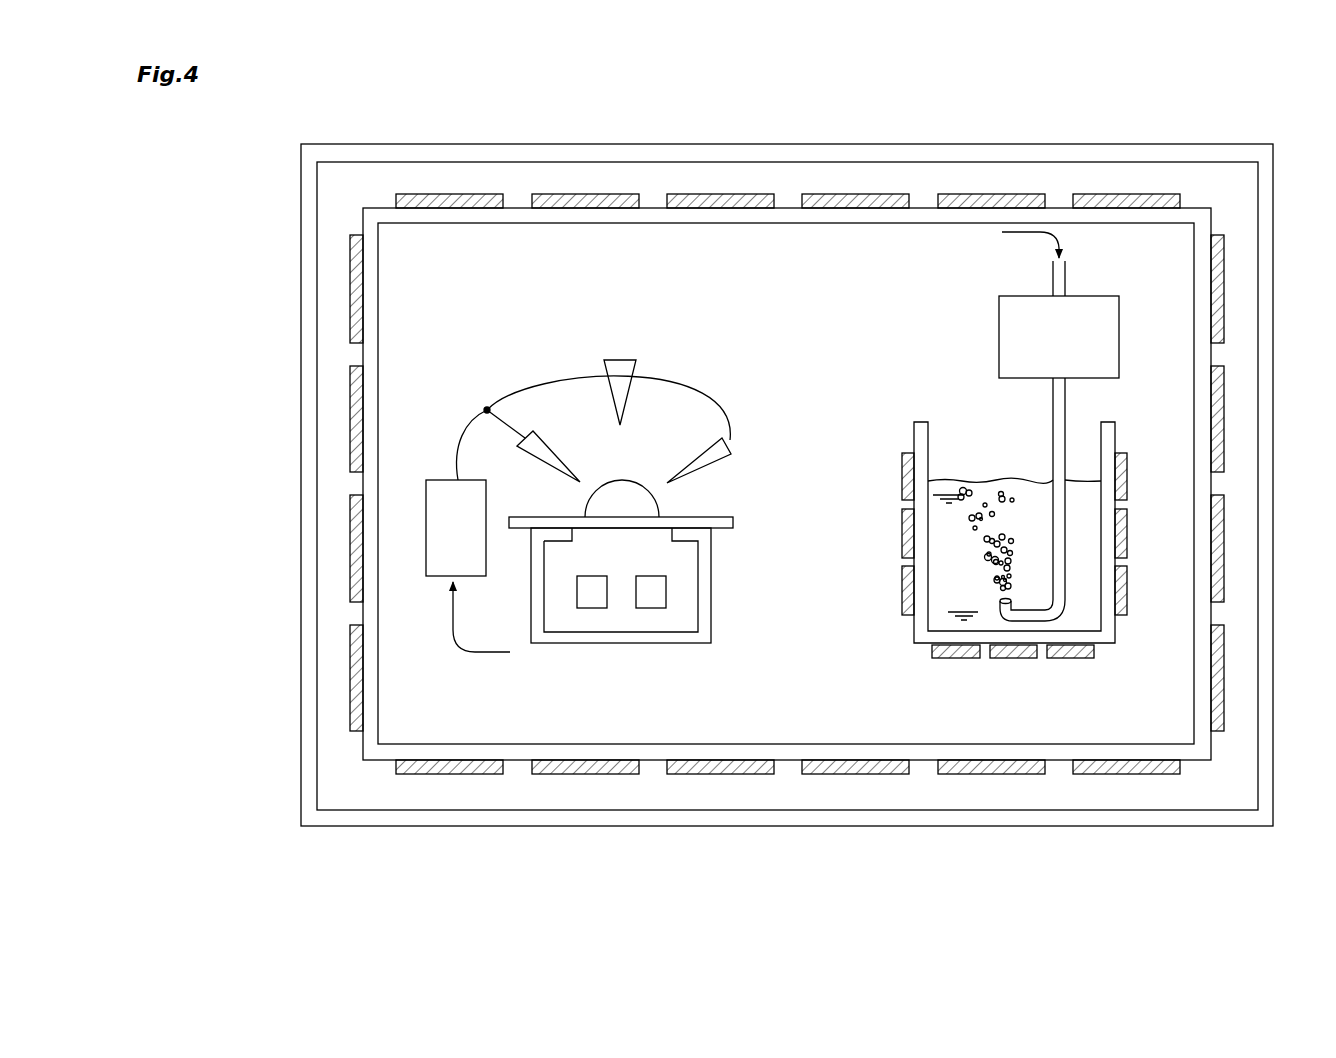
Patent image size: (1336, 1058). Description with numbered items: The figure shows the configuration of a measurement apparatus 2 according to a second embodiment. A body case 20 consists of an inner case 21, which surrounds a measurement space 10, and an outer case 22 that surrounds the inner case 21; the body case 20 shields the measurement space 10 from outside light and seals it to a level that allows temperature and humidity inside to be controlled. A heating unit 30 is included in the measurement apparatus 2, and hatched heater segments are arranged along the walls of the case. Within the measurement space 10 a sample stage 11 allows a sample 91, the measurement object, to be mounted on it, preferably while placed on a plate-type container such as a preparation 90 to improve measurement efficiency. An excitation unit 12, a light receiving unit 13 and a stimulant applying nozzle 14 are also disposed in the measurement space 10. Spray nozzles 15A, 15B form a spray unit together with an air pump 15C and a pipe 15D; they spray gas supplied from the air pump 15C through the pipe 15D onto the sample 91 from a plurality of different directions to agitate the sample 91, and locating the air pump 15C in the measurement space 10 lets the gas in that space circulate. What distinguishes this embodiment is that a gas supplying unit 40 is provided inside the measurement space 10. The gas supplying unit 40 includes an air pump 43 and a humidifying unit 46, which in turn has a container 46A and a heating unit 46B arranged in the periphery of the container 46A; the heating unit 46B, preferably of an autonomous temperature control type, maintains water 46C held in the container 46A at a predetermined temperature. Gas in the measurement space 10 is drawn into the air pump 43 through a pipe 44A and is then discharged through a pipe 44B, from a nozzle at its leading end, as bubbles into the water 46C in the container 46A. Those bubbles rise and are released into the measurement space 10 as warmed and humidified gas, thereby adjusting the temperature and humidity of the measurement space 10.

The measurement apparatus 2 is at (1236, 118).
The measurement space 10 is at (390, 730).
The sample stage 11 is at (711, 570).
The excitation unit 12 is at (598, 608).
The light receiving unit 13 is at (657, 608).
The stimulant applying nozzle 14 is at (624, 362).
The spray nozzle 15A is at (547, 446).
The spray nozzle 15B is at (688, 458).
The air pump 15C is at (436, 578).
The pipe 15D is at (470, 425).
The body case 20 is at (222, 302).
The inner case 21 is at (373, 313).
The outer case 22 is at (308, 396).
The heating unit 30 is at (452, 194).
The gas supplying unit 40 is at (885, 283).
The air pump 43 is at (1119, 331).
The pipe 44A is at (1065, 274).
The pipe 44B is at (1065, 392).
The humidifying unit 46 is at (1138, 696).
The container 46A is at (1103, 637).
The heating unit 46B is at (1127, 597).
The water 46C is at (1087, 522).
The preparation 90 is at (727, 517).
The sample 91 is at (638, 482).